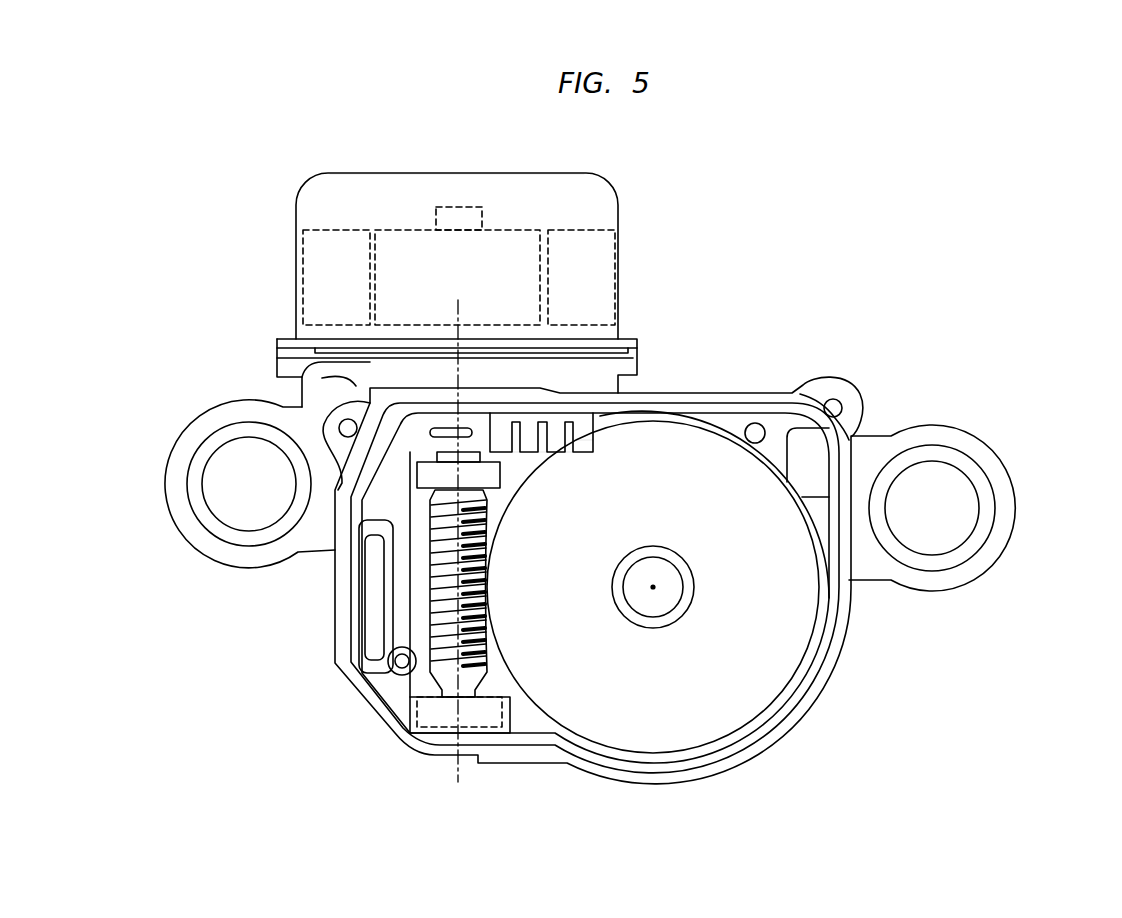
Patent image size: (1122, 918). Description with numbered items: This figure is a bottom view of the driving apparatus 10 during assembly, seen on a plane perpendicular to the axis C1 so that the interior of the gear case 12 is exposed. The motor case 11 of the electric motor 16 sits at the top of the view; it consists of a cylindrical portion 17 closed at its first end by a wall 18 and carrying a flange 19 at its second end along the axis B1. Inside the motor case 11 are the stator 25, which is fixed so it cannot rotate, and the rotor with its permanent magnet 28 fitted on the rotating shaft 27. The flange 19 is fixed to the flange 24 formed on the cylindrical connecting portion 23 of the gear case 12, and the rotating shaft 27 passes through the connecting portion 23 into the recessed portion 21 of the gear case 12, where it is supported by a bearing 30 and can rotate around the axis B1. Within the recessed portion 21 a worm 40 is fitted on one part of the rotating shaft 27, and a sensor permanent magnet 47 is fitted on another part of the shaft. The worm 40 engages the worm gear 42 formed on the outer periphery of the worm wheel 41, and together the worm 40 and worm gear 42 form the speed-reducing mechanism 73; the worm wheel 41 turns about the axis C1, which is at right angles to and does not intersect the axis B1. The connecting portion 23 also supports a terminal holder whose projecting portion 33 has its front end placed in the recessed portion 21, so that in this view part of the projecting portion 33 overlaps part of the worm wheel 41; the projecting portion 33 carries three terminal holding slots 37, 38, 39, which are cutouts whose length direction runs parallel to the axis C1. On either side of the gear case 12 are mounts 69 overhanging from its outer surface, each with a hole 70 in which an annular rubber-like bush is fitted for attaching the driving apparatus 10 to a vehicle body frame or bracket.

The driving apparatus 10 is at (233, 343).
The motor case 11 is at (375, 212).
The gear case 12 is at (358, 720).
The electric motor 16 is at (382, 218).
The cylindrical portion 17 is at (533, 357).
The wall 18 is at (430, 172).
The flange 19 is at (323, 337).
The recessed portion 21 is at (588, 660).
The connecting portion 23 is at (303, 376).
The flange 24 is at (545, 432).
The stator 25 is at (580, 243).
The rotating shaft 27 is at (435, 612).
The permanent magnet 28 is at (495, 250).
The bearing 30 is at (488, 727).
The projecting portion 33 is at (456, 309).
The terminal holding slot 37 is at (513, 432).
The terminal holding slot 38 is at (572, 434).
The terminal holding slot 39 is at (588, 442).
The worm 40 is at (357, 596).
The worm wheel 41 is at (742, 712).
The worm gear 42 is at (637, 413).
The permanent magnet 47 is at (427, 477).
The mount 69 is at (178, 497).
The hole 70 is at (218, 468).
The speed-reducing mechanism 73 is at (536, 728).
The axis B1 is at (455, 762).
The axis C1 is at (653, 587).